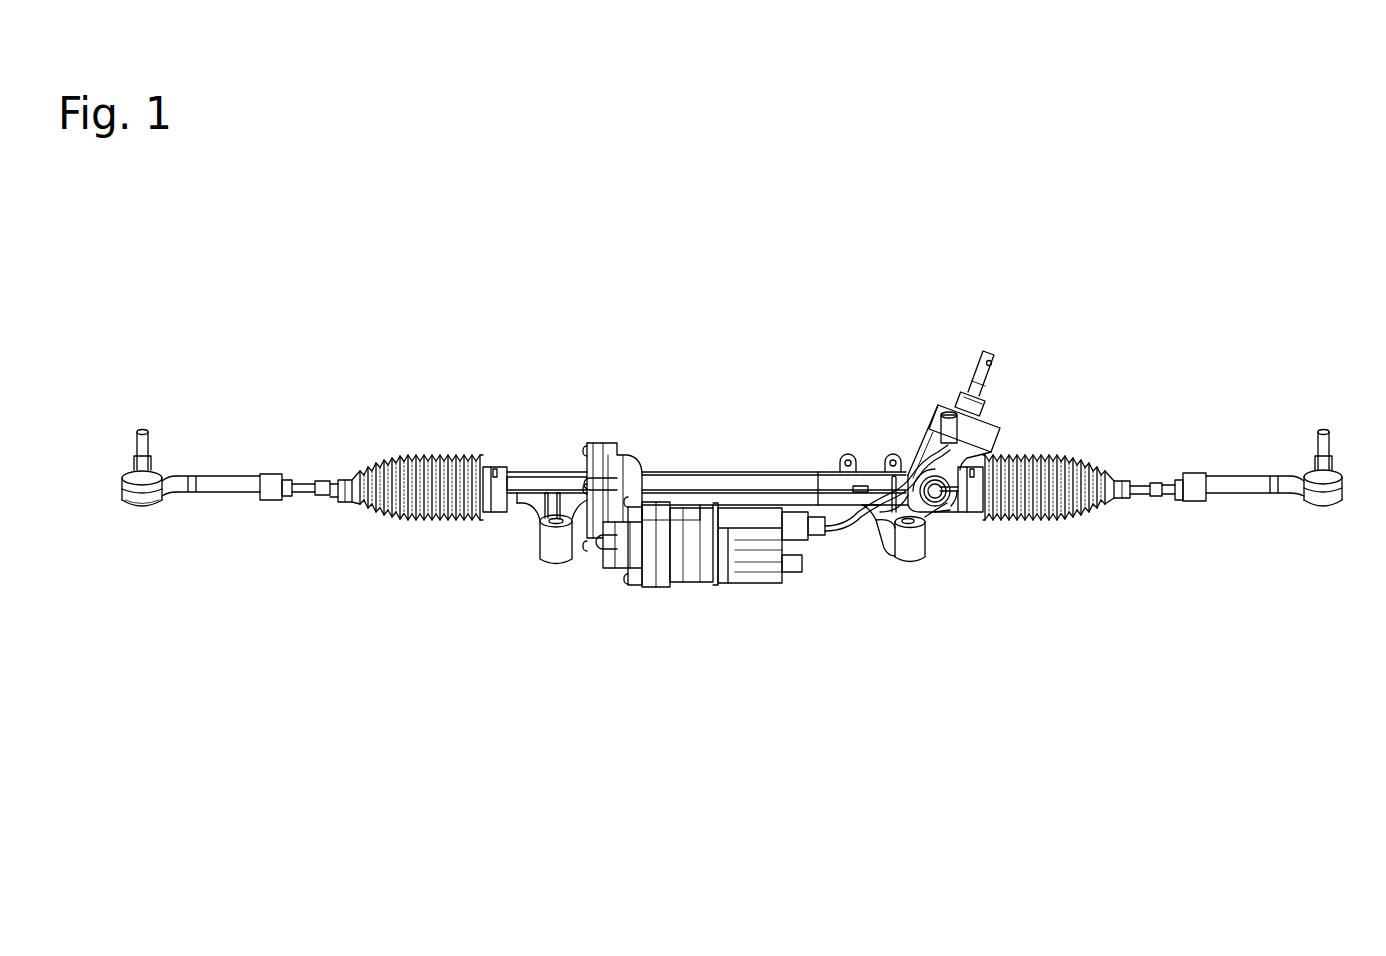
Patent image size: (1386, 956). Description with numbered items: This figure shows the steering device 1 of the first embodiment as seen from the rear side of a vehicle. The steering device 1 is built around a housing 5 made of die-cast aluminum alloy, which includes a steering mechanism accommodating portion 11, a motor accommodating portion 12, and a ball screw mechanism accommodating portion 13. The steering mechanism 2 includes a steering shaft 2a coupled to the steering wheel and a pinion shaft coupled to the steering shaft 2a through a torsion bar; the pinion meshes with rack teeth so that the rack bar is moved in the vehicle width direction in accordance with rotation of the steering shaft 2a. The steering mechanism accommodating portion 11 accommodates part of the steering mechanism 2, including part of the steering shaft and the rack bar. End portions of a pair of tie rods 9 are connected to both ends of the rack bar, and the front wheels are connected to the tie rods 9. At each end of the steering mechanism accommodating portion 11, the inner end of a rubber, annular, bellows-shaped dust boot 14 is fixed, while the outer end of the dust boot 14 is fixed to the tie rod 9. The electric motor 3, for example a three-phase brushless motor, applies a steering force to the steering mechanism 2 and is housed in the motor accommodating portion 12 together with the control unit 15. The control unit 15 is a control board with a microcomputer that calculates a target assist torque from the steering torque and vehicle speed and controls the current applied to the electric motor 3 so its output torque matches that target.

The steering device 1 is at (1142, 372).
The steering mechanism 2 is at (896, 440).
The steering shaft 2a is at (985, 379).
The electric motor 3 is at (690, 590).
The housing 5 is at (701, 460).
The tie rod 9 is at (222, 476).
The steering mechanism accommodating portion 11 is at (745, 473).
The motor accommodating portion 12 is at (660, 590).
The ball screw mechanism accommodating portion 13 is at (592, 572).
The dust boot 14 is at (420, 462).
The control unit 15 is at (750, 596).